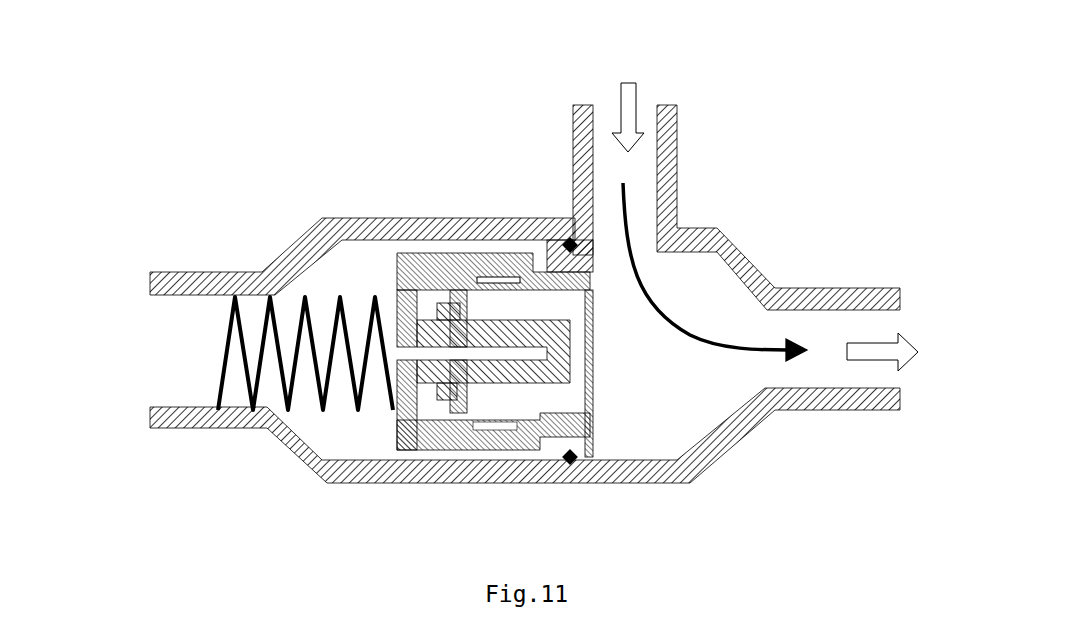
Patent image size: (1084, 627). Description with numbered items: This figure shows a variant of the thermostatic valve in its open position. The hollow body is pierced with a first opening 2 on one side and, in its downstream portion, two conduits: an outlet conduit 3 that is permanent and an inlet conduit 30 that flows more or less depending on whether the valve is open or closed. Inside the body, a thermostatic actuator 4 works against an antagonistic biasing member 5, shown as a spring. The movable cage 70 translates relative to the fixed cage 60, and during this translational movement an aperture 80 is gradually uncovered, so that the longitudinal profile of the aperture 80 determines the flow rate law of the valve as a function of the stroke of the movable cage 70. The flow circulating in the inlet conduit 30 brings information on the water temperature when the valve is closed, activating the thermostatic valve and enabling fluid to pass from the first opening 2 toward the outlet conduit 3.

The first opening 2 is at (165, 310).
The outlet conduit 3 is at (887, 325).
The thermostatic actuator 4 is at (565, 362).
The biasing member 5 is at (267, 300).
The inlet conduit 30 is at (640, 155).
The fixed cage 60 is at (567, 450).
The movable cage 70 is at (400, 440).
The aperture 80 is at (502, 280).